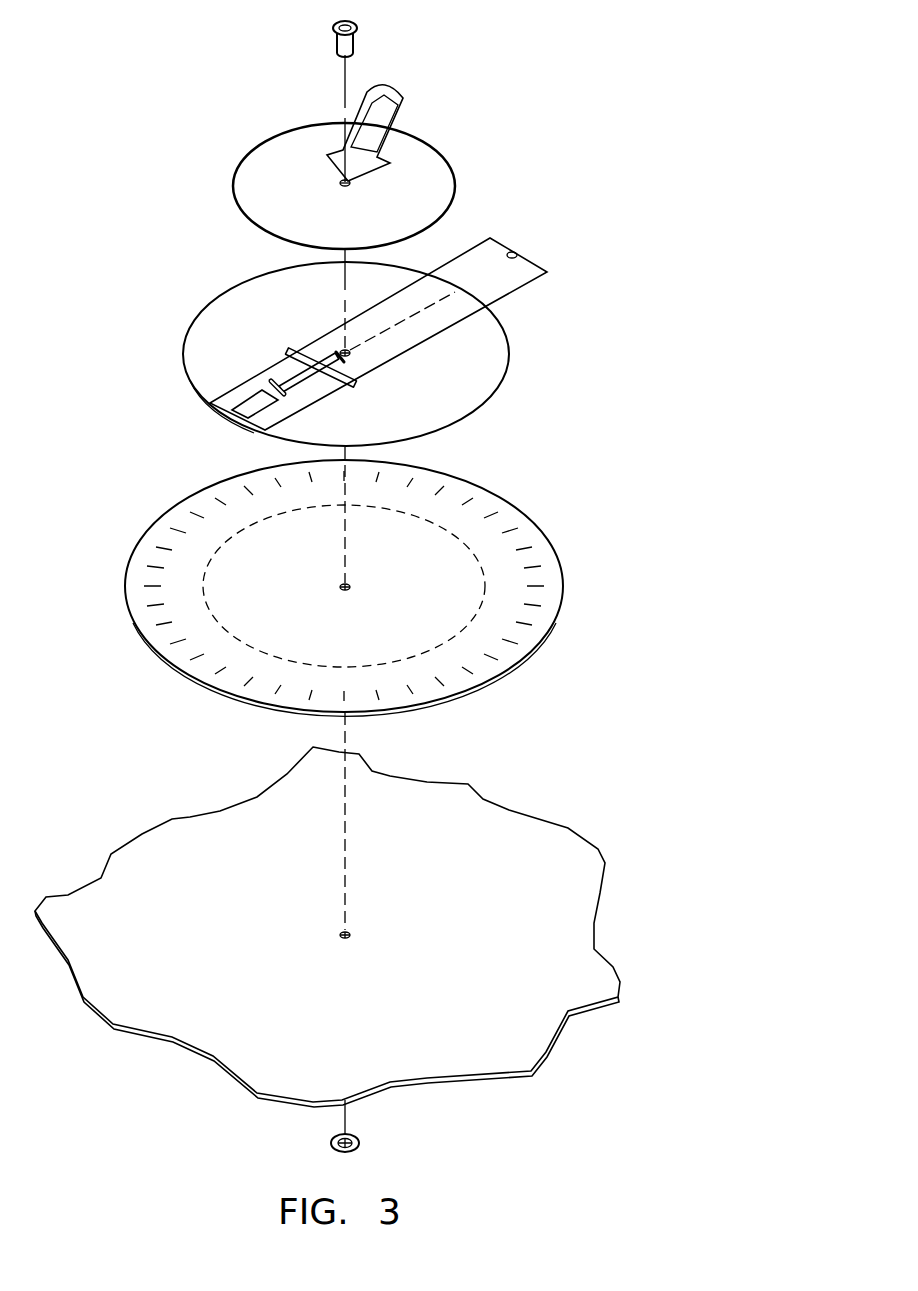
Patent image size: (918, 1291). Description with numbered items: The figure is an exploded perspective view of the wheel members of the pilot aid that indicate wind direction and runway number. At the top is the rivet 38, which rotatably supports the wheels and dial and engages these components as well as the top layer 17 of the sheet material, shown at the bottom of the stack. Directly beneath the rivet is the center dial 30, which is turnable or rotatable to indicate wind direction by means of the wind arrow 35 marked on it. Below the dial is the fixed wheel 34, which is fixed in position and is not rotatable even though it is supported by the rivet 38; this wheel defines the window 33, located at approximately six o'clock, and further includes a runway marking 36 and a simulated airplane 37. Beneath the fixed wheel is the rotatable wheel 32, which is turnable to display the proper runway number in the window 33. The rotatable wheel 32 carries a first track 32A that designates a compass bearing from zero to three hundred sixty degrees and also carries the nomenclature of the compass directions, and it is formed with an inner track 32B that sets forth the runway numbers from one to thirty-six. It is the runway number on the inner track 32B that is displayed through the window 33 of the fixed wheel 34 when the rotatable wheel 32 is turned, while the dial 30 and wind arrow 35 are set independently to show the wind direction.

The top layer 17 is at (540, 858).
The center dial 30 is at (418, 178).
The rotatable wheel 32 is at (560, 548).
The first track 32A is at (503, 516).
The inner track 32B is at (190, 615).
The window 33 is at (232, 396).
The fixed wheel 34 is at (462, 375).
The wind arrow 35 is at (402, 98).
The runway marking 36 is at (440, 319).
The simulated airplane 37 is at (290, 345).
The rivet 38 is at (368, 24).